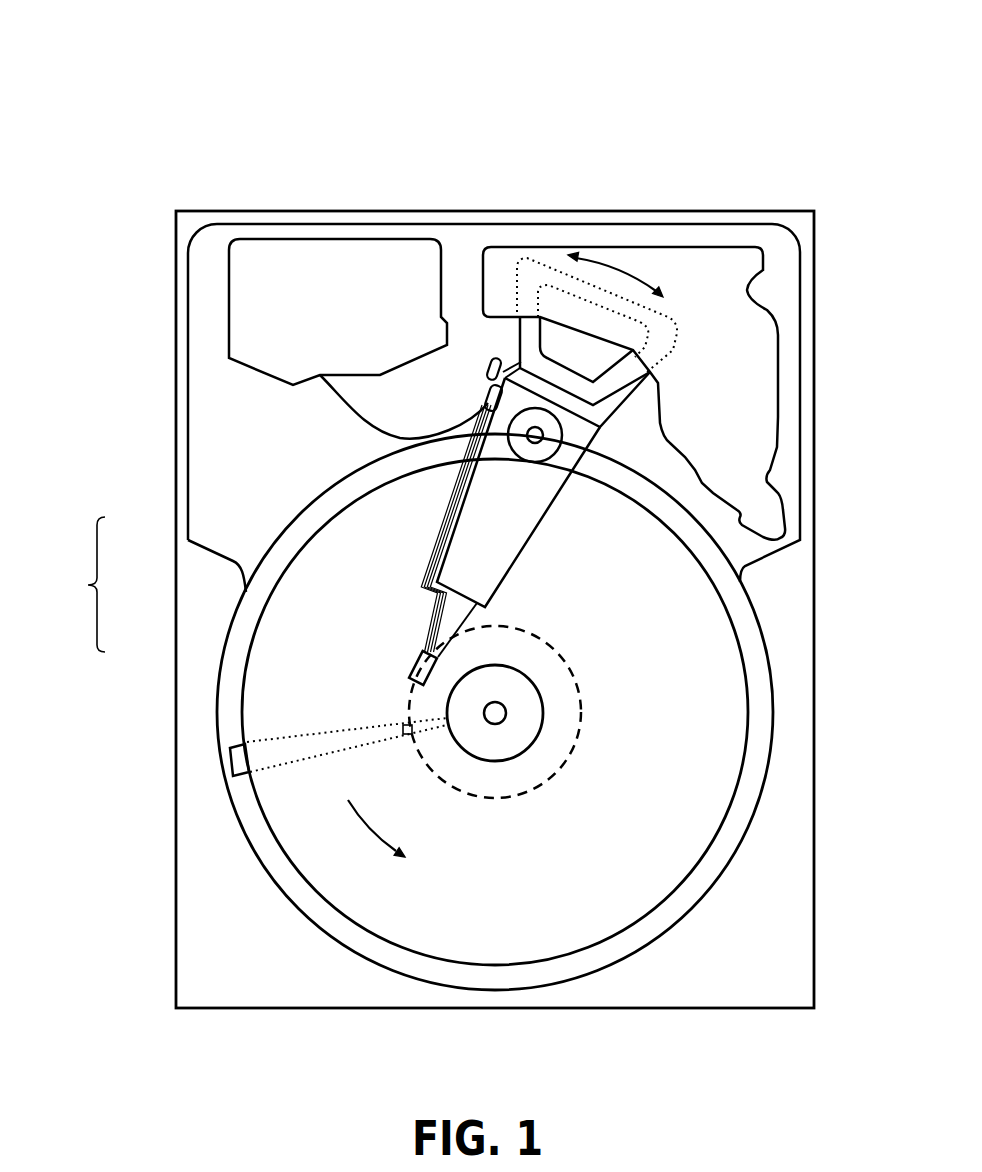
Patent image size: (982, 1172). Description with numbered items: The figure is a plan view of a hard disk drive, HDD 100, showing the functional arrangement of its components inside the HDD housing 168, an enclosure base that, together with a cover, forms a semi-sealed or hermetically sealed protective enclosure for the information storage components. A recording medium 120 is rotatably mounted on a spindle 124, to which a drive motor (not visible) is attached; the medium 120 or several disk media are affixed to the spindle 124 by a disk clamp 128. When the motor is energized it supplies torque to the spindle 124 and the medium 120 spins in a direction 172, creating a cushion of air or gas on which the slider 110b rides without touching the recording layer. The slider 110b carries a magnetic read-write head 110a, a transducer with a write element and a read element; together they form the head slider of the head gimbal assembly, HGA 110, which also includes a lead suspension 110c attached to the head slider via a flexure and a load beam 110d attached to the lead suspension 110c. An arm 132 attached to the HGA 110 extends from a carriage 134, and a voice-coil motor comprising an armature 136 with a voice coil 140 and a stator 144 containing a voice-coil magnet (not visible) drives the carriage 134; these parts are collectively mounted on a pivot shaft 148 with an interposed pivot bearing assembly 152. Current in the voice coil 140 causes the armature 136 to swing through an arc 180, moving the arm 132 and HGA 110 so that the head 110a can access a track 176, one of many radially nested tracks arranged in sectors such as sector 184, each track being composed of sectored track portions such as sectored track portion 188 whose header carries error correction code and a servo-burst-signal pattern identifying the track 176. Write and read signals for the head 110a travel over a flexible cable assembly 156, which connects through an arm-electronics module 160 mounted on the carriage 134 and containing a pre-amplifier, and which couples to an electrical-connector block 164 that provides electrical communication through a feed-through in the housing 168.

The hard disk drive 100 is at (100, 86).
The head gimbal assembly 110 is at (265, 541).
The magnetic read-write head 110a is at (410, 677).
The slider 110b is at (423, 660).
The lead suspension 110c is at (433, 617).
The load beam 110d is at (423, 585).
The recording medium 120 is at (680, 665).
The spindle 124 is at (498, 713).
The disk clamp 128 is at (522, 732).
The arm 132 is at (488, 550).
The carriage 134 is at (553, 467).
The armature 136 is at (519, 366).
The voice coil 140 is at (531, 328).
The stator 144 is at (748, 335).
The pivot shaft 148 is at (540, 435).
The pivot bearing assembly 152 is at (550, 447).
The flexible cable assembly 156 is at (353, 410).
The arm-electronics module 160 is at (487, 398).
The electrical-connector block 164 is at (255, 312).
The HDD housing 168 is at (798, 221).
The direction 172 is at (403, 826).
The track 176 is at (572, 675).
The arc 180 is at (610, 265).
The sector 184 is at (228, 748).
The sectored track portion 188 is at (403, 728).